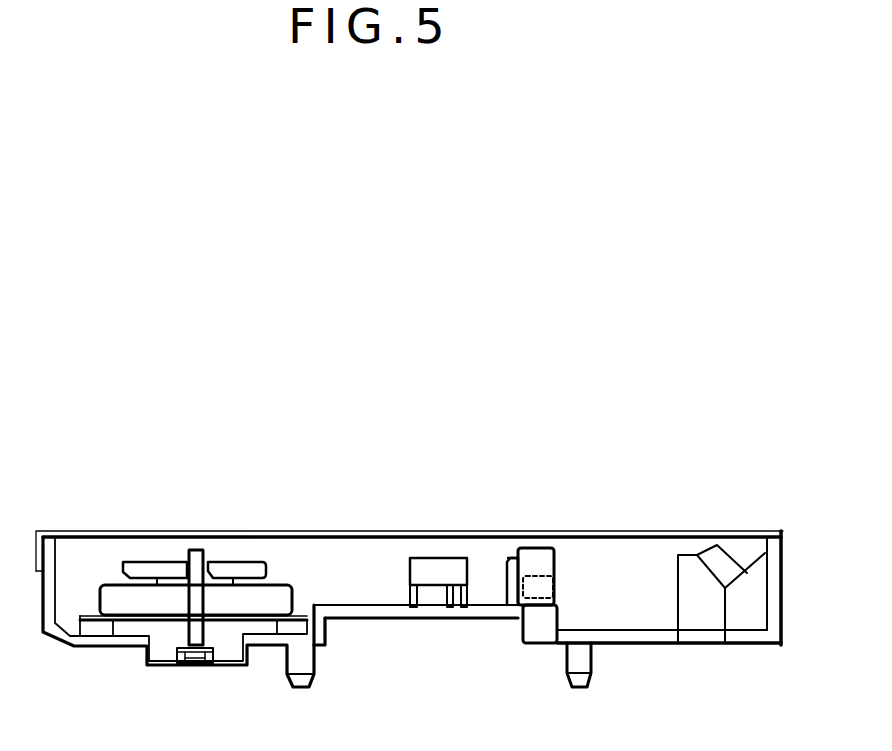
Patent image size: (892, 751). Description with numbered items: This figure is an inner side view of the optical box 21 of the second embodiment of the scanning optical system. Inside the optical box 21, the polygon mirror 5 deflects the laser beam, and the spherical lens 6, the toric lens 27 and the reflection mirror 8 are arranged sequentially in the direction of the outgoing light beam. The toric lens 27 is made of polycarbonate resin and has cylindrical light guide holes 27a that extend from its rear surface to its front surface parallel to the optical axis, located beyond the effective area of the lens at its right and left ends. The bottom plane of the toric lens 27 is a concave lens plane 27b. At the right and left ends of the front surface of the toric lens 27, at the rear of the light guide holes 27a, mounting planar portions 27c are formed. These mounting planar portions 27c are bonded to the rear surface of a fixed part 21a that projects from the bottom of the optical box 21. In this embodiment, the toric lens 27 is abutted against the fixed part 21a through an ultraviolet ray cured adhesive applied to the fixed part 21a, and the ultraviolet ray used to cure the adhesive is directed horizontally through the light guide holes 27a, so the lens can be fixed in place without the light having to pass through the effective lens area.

The polygon mirror 5 is at (232, 565).
The spherical lens 6 is at (438, 578).
The reflection mirror 8 is at (722, 560).
The optical box 21 is at (497, 608).
The fixed part 21a is at (508, 588).
The toric lens 27 is at (535, 562).
The light guide hole 27a is at (550, 586).
The concave lens plane 27b is at (527, 612).
The mounting planar portion 27c is at (513, 557).